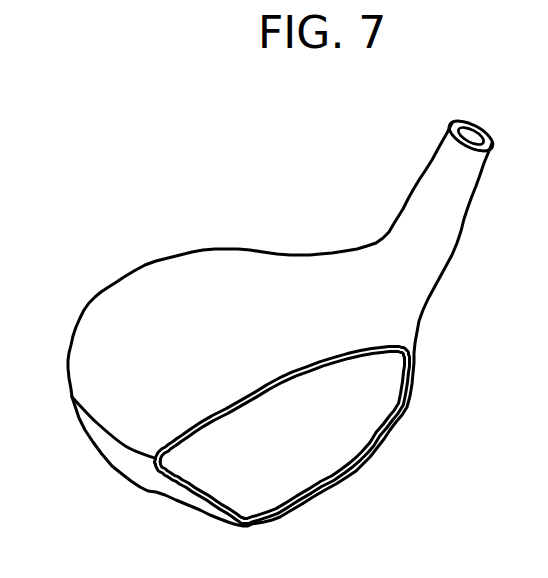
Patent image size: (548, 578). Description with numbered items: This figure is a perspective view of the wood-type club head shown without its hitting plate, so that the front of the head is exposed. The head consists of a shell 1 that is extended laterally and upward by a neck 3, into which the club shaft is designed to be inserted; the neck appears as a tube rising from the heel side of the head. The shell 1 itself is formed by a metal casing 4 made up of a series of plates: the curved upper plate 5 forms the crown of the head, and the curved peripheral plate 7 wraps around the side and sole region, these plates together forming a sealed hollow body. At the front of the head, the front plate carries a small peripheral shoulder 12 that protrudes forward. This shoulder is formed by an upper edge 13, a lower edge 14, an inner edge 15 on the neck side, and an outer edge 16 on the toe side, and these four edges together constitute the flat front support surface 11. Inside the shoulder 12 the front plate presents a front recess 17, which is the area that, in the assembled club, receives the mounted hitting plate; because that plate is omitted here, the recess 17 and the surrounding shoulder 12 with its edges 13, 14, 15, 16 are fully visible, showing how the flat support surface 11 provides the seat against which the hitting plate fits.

The shell 1 is at (276, 330).
The neck 3 is at (451, 213).
The metal casing 4 is at (98, 298).
The upper plate 5 is at (219, 286).
The peripheral plate 7 is at (88, 427).
The front support surface 11 is at (364, 426).
The peripheral shoulder 12 is at (417, 364).
The upper edge 13 is at (317, 362).
The lower edge 14 is at (350, 474).
The inner edge 15 is at (386, 424).
The outer edge 16 is at (168, 482).
The front recess 17 is at (400, 404).